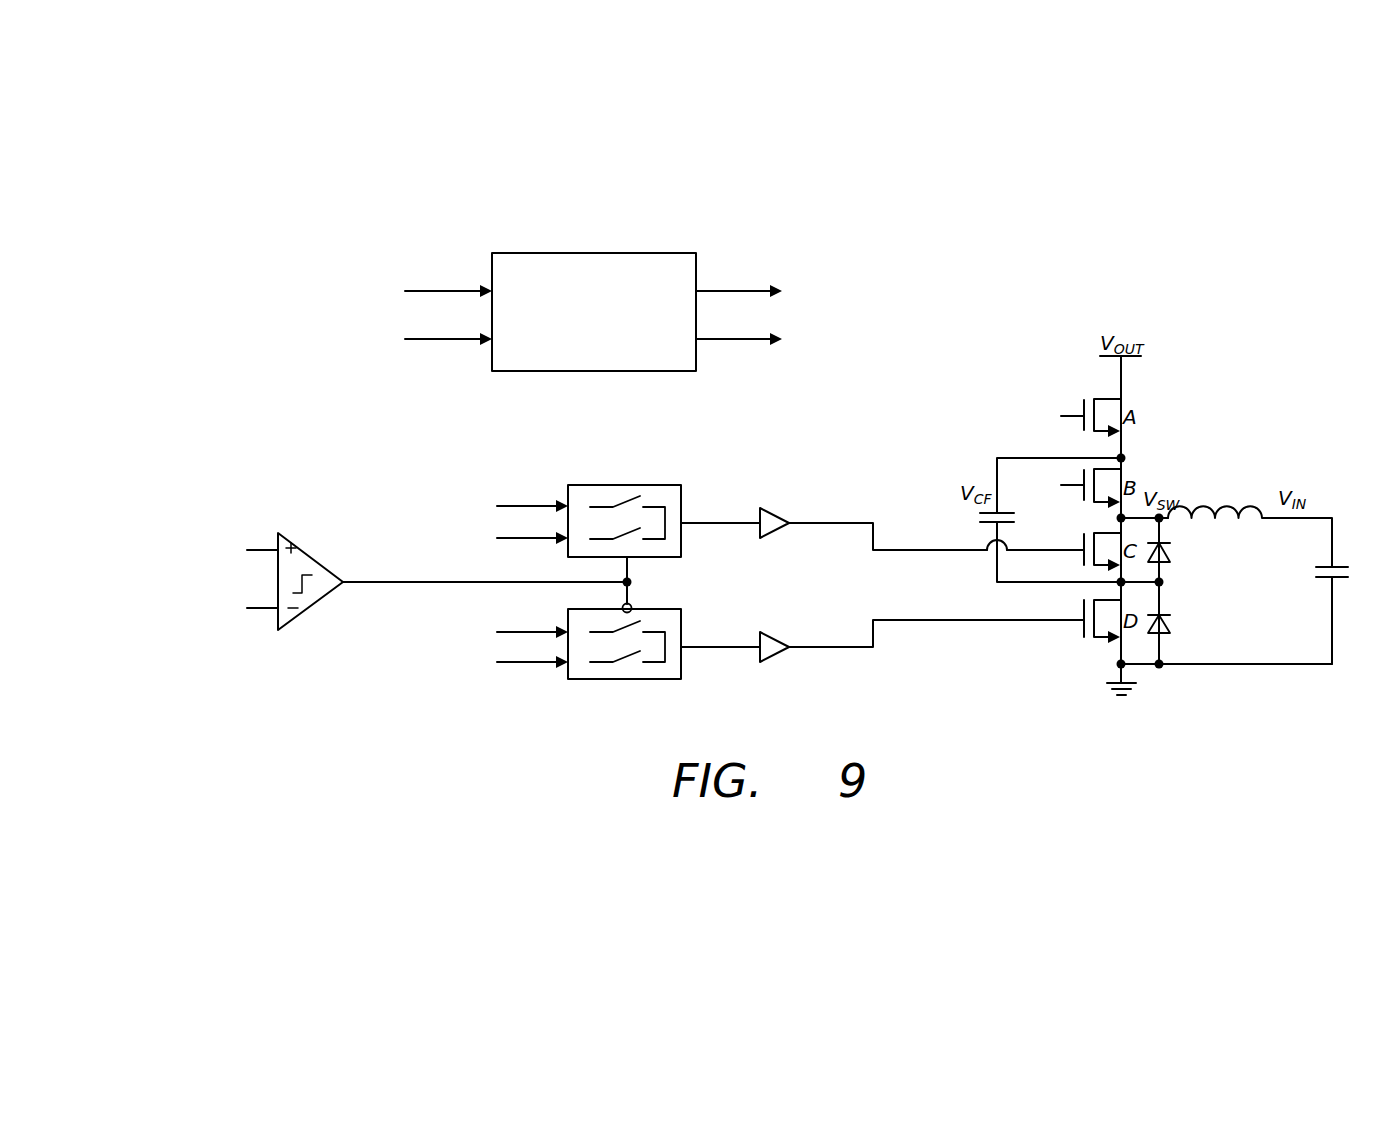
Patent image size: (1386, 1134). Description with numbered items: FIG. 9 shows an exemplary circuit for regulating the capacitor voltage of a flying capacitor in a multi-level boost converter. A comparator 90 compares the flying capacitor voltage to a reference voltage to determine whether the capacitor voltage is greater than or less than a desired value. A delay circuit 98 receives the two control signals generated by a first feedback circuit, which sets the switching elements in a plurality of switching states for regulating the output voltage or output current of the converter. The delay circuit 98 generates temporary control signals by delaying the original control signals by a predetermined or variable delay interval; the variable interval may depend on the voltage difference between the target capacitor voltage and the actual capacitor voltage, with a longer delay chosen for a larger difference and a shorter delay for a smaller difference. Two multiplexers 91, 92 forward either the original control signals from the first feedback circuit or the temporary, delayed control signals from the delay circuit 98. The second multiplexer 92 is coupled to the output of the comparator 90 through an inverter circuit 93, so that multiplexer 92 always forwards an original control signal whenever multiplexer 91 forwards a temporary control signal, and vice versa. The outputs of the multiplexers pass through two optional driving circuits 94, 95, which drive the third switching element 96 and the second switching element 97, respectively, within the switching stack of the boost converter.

The comparator 90 is at (315, 557).
The multiplexer 91 is at (627, 485).
The multiplexer 92 is at (627, 679).
The inverter circuit 93 is at (632, 605).
The driving circuit 94 is at (775, 512).
The driving circuit 95 is at (775, 636).
The third switching element 96 is at (1178, 538).
The second switching element 97 is at (1178, 608).
The delay circuit 98 is at (632, 371).